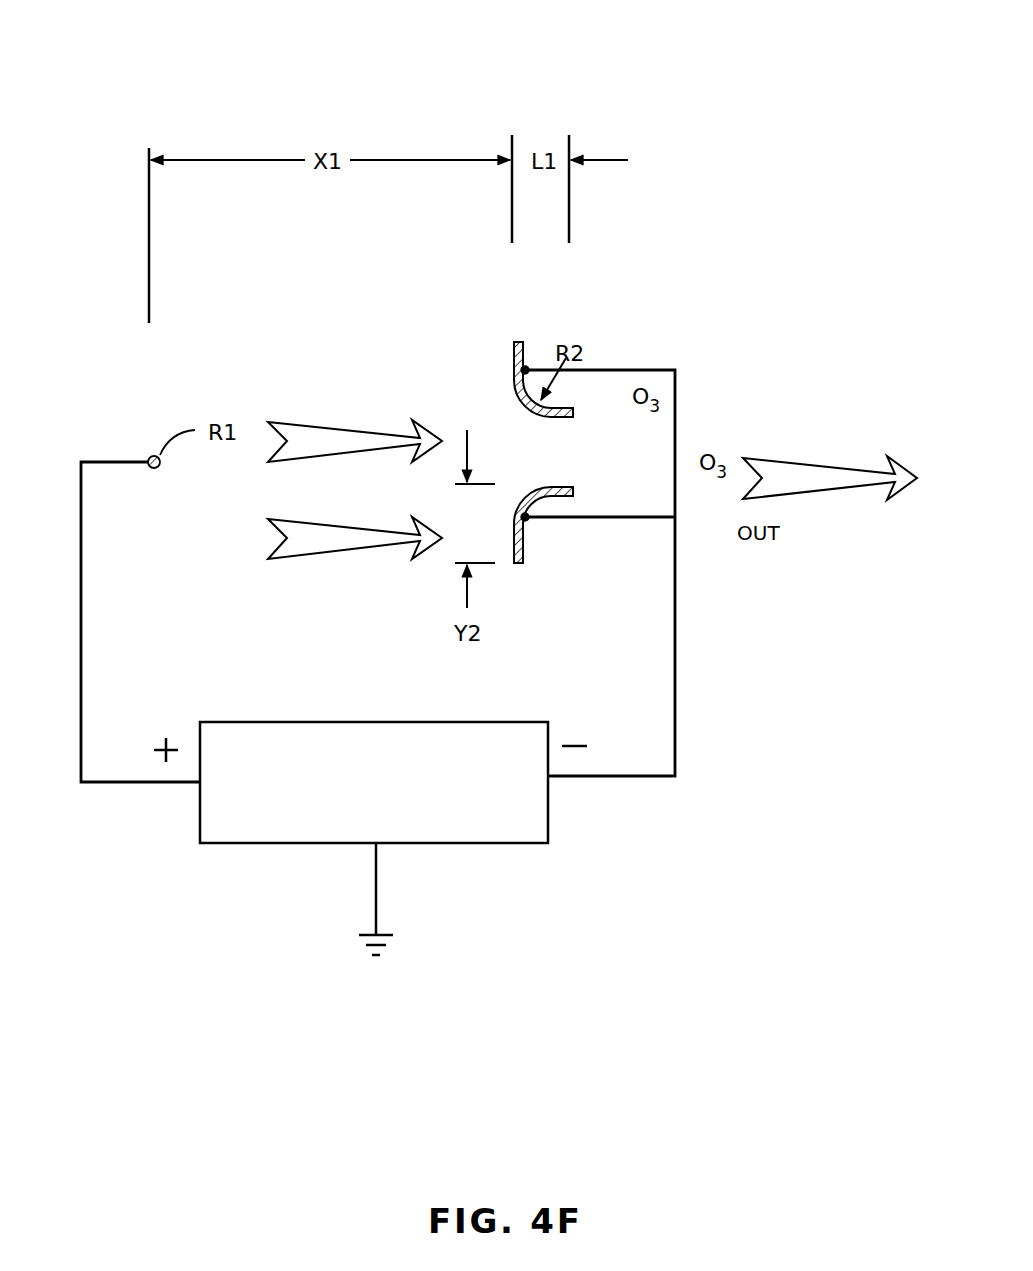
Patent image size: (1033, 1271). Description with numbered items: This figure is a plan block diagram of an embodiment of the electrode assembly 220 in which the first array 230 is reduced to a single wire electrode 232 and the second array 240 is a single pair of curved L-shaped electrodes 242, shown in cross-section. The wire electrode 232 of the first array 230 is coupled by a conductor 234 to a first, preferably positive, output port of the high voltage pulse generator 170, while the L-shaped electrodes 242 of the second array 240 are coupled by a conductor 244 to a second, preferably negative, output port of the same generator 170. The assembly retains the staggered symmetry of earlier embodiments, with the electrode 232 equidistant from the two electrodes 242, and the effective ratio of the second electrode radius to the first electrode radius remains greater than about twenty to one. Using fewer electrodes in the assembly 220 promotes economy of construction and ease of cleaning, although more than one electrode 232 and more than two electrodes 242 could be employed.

The electrode assembly 220 is at (158, 55).
The first array 230 is at (276, 388).
The second array 240 is at (440, 388).
The wire electrode 232 is at (157, 470).
The conductor 234 is at (82, 722).
The high voltage pulse generator 170 is at (395, 720).
The conductor 244 is at (680, 686).
The L-shaped electrodes 242 is at (526, 340).